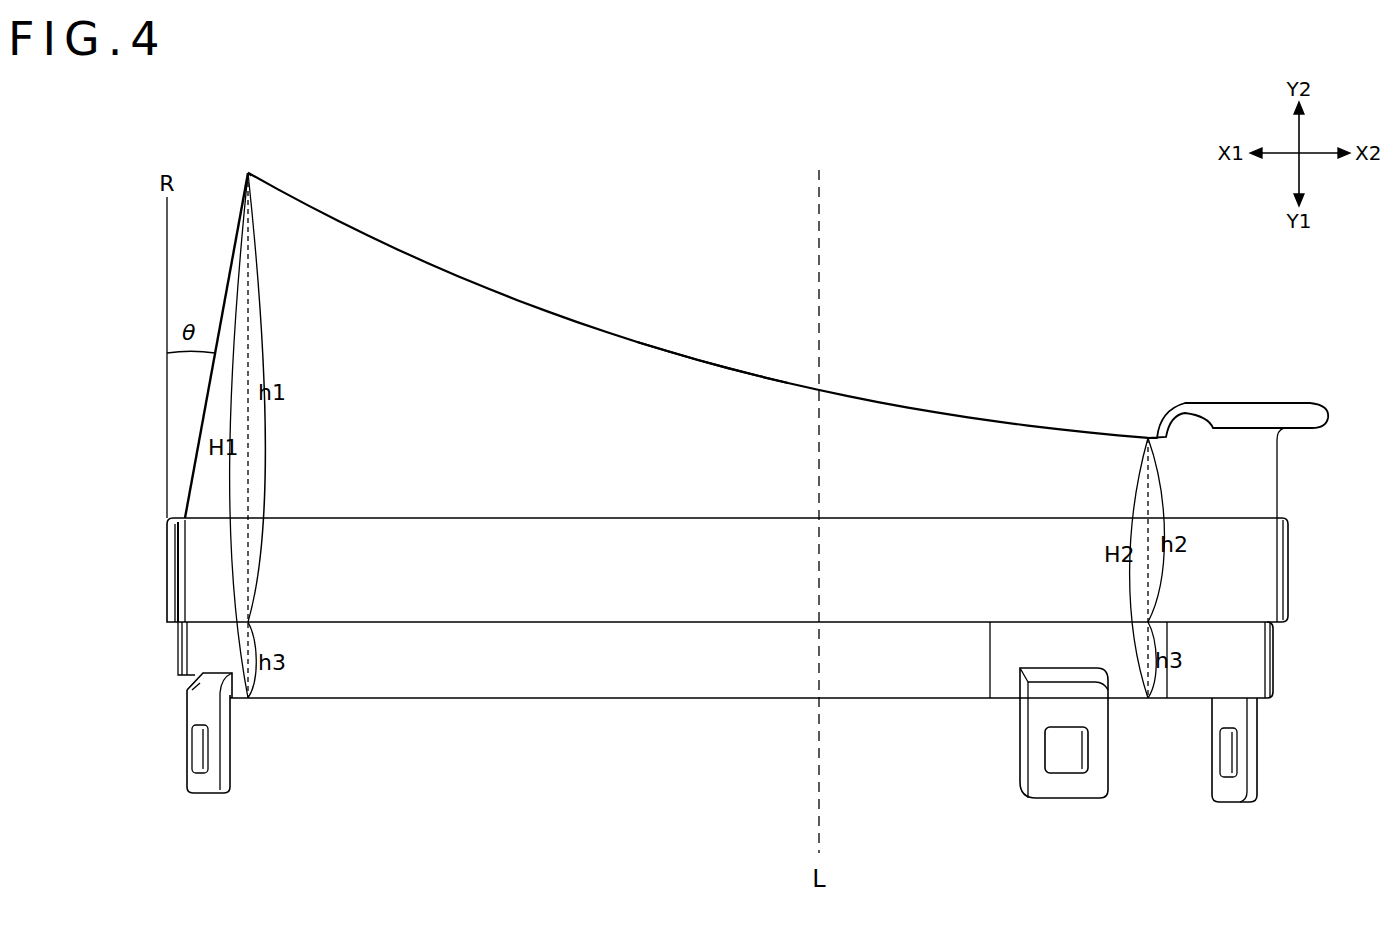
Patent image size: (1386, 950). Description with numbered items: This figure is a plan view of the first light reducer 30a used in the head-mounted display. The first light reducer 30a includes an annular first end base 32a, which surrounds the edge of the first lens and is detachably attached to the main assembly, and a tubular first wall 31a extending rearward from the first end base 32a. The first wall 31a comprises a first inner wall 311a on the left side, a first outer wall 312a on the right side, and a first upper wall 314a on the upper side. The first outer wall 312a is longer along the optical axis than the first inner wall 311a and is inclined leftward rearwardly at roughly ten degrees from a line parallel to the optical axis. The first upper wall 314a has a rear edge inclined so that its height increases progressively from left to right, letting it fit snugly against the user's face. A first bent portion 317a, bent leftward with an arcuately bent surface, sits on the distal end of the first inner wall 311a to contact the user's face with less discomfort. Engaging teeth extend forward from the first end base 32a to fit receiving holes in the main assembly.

The first light reducer 30a is at (747, 482).
The first wall 31a is at (497, 292).
The first inner wall 311a is at (1148, 438).
The first outer wall 312a is at (248, 173).
The first upper wall 314a is at (720, 368).
The first bent portion 317a is at (1262, 412).
The first end base 32a is at (680, 683).